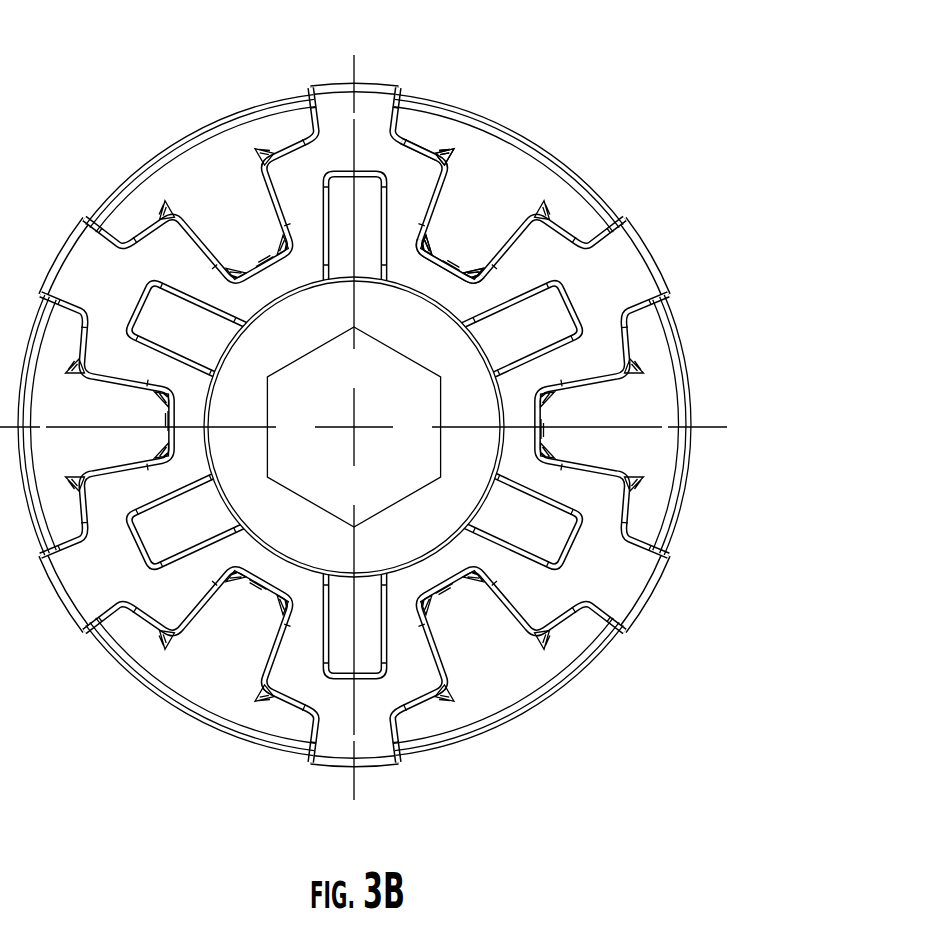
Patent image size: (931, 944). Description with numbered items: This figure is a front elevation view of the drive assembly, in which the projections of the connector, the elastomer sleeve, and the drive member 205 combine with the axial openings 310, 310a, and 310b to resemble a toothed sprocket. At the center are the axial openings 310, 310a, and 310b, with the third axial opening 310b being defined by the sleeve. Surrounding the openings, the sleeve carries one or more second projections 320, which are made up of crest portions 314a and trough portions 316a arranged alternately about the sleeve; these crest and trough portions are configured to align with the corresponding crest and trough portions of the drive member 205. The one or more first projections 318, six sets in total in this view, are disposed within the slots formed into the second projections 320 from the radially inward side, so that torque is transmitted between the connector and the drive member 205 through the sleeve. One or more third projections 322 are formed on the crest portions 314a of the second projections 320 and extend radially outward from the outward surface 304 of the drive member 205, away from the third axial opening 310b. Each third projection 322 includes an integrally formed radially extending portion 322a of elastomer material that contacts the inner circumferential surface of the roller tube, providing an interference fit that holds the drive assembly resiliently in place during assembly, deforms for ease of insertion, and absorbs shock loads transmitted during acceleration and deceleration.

The drive member 205 is at (389, 424).
The outward surface 304 is at (688, 354).
The axial opening 310 is at (522, 427).
The axial opening 310a is at (354, 427).
The third axial opening 310b is at (389, 463).
The crest portions 314a is at (449, 156).
The trough portions 316a is at (452, 254).
The first projections 318 is at (573, 561).
The second projections 320 is at (416, 143).
The third projections 322 is at (310, 116).
The radially extending portion 322a is at (401, 88).